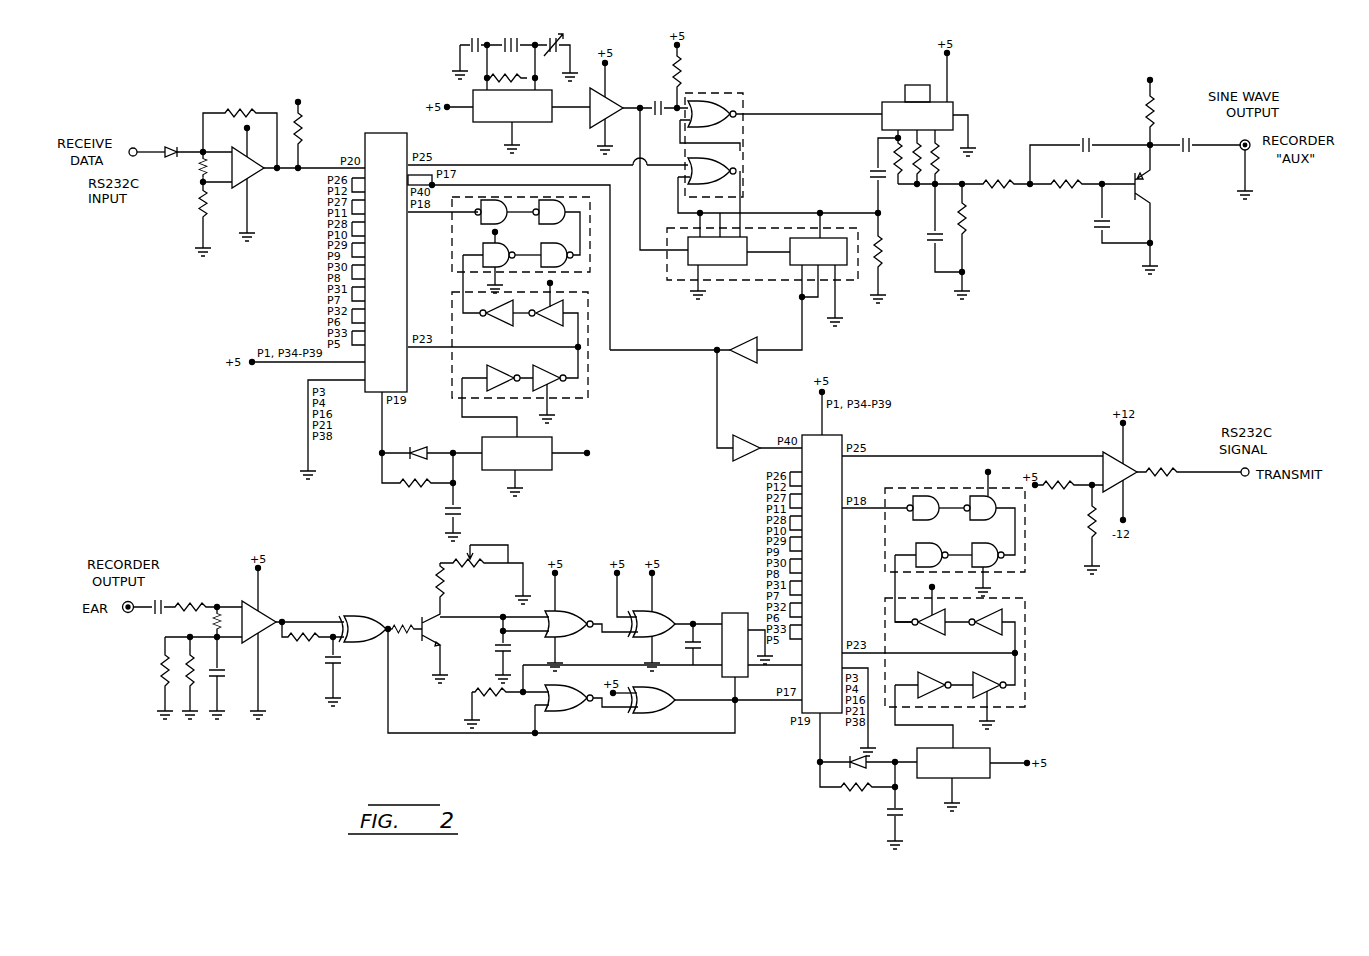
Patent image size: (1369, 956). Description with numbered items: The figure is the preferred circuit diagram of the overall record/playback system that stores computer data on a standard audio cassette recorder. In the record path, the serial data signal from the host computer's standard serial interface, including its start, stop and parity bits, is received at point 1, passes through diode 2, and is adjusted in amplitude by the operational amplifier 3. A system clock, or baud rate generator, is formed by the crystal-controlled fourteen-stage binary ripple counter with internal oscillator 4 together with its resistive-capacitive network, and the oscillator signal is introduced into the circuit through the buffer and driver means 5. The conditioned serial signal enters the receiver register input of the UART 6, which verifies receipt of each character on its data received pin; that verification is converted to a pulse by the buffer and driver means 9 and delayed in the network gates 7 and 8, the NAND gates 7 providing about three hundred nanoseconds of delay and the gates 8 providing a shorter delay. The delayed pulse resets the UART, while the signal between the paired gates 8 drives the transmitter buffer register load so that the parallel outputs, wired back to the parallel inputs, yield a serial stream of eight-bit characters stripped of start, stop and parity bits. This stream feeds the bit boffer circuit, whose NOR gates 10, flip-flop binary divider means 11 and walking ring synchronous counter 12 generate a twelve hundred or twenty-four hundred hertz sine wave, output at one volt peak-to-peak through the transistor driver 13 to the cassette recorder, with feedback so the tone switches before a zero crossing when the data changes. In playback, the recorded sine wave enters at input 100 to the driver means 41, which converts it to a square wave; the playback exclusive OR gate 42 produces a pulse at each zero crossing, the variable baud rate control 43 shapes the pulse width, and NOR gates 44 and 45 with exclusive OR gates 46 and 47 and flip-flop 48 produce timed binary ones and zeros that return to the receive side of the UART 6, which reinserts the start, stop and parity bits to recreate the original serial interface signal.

The point 1 is at (136, 148).
The diode 2 is at (178, 147).
The operational amplifier 3 is at (252, 176).
The binary ripple counter with internal oscillator 4 is at (540, 122).
The buffer and driver means 5 is at (612, 100).
The UART 6 is at (385, 133).
The network gates 7 is at (452, 232).
The network gates 8 is at (590, 387).
The buffer and driver means 9 is at (543, 471).
The NOR gates 10 is at (743, 136).
The flip-flop binary divider means 11 is at (773, 276).
The walking ring synchronous counter 12 is at (885, 100).
The transistor driver 13 is at (1152, 186).
The driver means 41 is at (262, 612).
The playback exclusive OR gate 42 is at (362, 613).
The variable baud rate control 43 is at (487, 578).
The NOR gate 44 is at (567, 612).
The NOR gate 45 is at (565, 712).
The exclusive OR gate 46 is at (658, 612).
The exclusive OR gate 47 is at (655, 714).
The flip-flop 48 is at (749, 670).
The input 100 is at (132, 616).